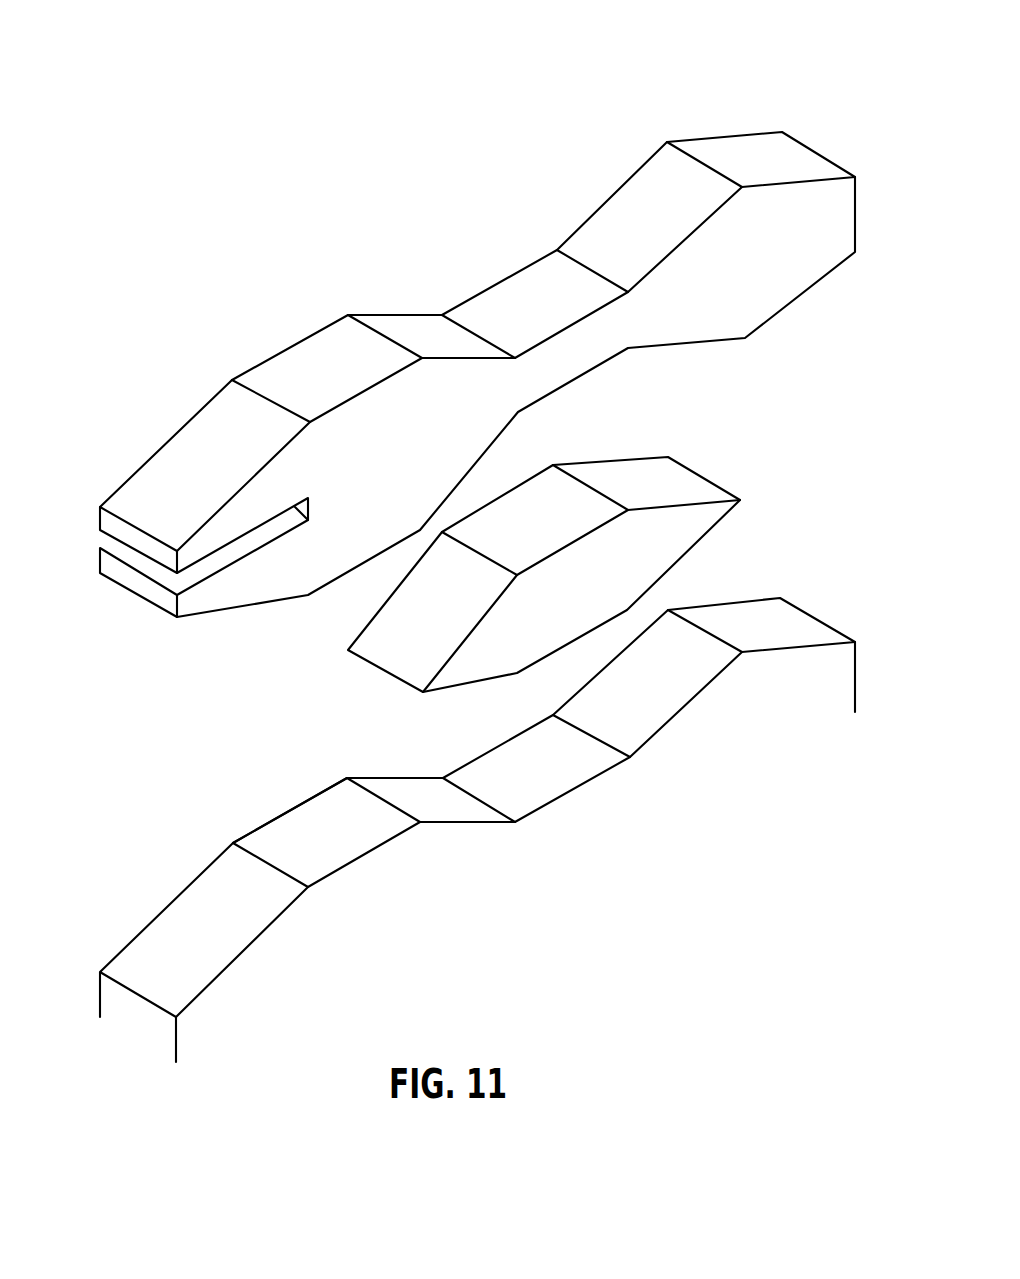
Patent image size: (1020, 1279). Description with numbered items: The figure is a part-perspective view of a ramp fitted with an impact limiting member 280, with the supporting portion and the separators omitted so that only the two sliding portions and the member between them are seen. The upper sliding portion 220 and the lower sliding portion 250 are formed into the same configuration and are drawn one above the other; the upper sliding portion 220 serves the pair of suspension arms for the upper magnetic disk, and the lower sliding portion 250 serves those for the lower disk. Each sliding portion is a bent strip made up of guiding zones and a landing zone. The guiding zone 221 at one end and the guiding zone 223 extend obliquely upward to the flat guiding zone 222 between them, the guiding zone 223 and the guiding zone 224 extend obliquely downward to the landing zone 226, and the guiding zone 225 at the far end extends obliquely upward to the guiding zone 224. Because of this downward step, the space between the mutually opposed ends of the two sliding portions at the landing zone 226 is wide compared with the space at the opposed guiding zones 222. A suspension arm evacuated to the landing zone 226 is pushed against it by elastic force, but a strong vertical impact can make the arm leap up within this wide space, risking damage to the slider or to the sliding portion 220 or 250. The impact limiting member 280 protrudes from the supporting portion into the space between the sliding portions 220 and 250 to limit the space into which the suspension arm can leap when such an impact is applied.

The upper sliding portion 220 is at (819, 103).
The guiding zone 221 is at (203, 450).
The flat guiding zone 222 is at (319, 370).
The guiding zone 223 is at (417, 332).
The guiding zone 224 is at (637, 205).
The guiding zone 225 is at (751, 158).
The landing zone 226 is at (525, 297).
The impact limiting member 280 is at (748, 450).
The lower sliding portion 250 is at (862, 594).